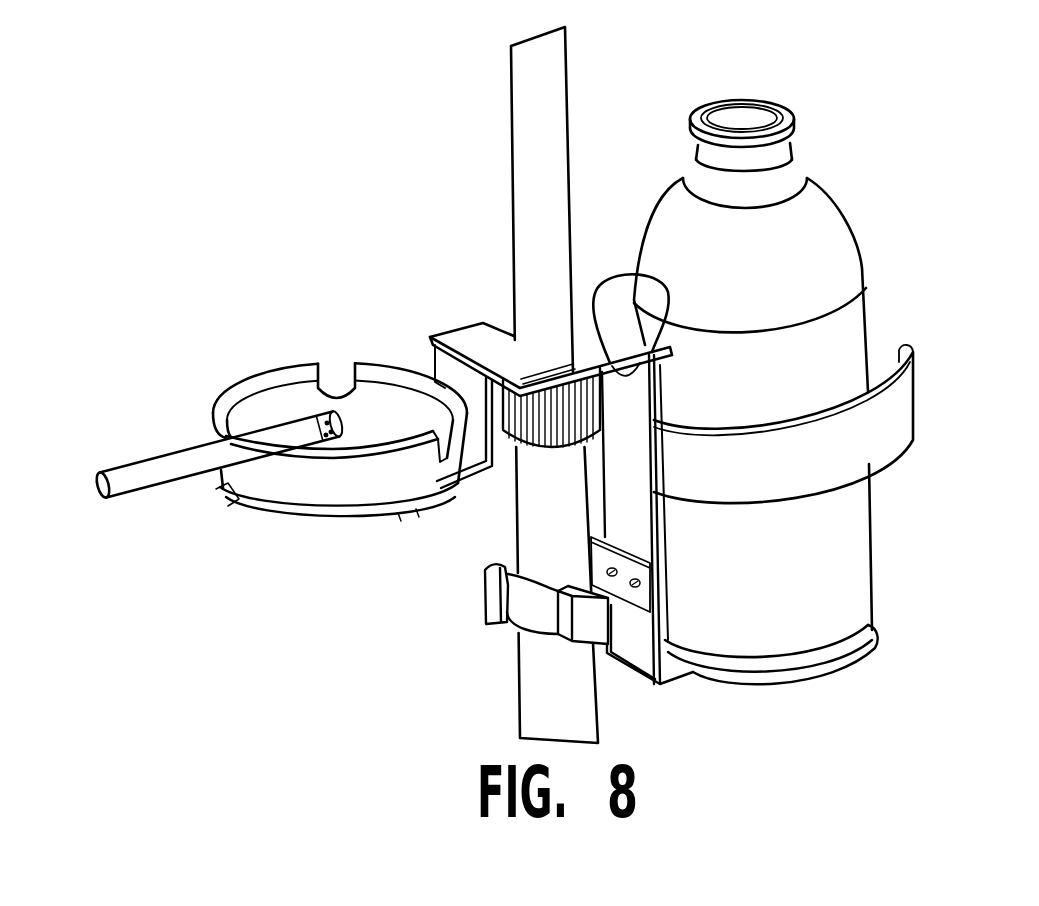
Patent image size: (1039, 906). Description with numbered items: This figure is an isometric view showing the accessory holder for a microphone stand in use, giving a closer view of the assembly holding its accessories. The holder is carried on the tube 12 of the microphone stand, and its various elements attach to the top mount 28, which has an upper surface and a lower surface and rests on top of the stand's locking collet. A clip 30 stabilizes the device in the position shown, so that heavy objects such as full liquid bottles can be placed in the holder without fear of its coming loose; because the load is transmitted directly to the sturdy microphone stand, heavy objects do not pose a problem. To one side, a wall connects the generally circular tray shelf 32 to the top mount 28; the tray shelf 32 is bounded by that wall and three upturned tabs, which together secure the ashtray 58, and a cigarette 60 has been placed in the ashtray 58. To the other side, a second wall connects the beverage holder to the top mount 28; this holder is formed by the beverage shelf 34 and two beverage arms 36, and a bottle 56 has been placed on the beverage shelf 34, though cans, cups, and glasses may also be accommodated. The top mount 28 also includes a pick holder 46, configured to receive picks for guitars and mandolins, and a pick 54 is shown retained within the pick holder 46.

The tube 12 is at (540, 685).
The top mount 28 is at (468, 332).
The clip 30 is at (507, 598).
The tray shelf 32 is at (335, 520).
The beverage shelf 34 is at (835, 672).
The beverage arms 36 is at (898, 420).
The pick holder 46 is at (608, 358).
The pick 54 is at (618, 292).
The bottle 56 is at (812, 235).
The ashtray 58 is at (260, 390).
The cigarette 60 is at (162, 471).